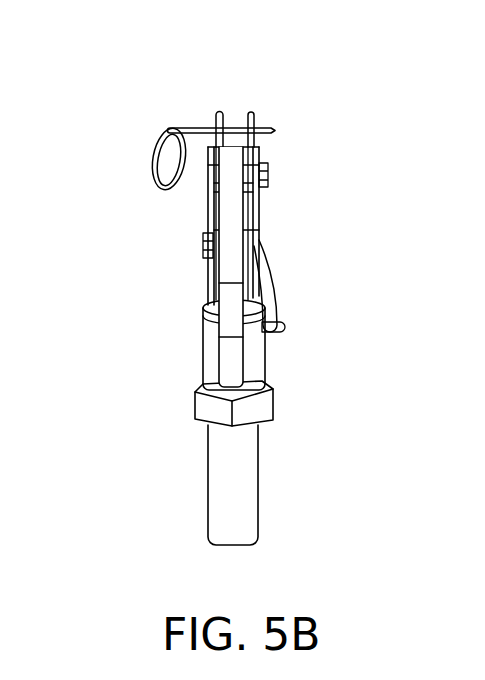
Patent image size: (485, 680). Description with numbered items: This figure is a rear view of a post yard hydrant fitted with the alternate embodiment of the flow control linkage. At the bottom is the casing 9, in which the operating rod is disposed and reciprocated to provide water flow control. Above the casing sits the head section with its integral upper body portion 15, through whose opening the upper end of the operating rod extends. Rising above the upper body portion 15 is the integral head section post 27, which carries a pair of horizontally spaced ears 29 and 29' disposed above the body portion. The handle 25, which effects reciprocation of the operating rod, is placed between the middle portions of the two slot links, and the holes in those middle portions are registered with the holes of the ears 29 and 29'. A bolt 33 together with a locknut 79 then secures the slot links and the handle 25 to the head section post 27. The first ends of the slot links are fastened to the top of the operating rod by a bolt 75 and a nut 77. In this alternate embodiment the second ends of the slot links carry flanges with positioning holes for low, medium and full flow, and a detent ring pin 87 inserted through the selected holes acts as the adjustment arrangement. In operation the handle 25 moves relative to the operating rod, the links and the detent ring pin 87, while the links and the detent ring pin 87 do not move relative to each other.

The casing 9 is at (236, 468).
The upper body portion 15 is at (212, 343).
The handle 25 is at (228, 315).
The head section post 27 is at (262, 230).
The ear 29 is at (186, 226).
The ear 29' is at (308, 222).
The bolt 33 is at (212, 172).
The bolt 75 is at (272, 272).
The nut 77 is at (203, 255).
The locknut 79 is at (273, 173).
The detent ring pin 87 is at (193, 127).